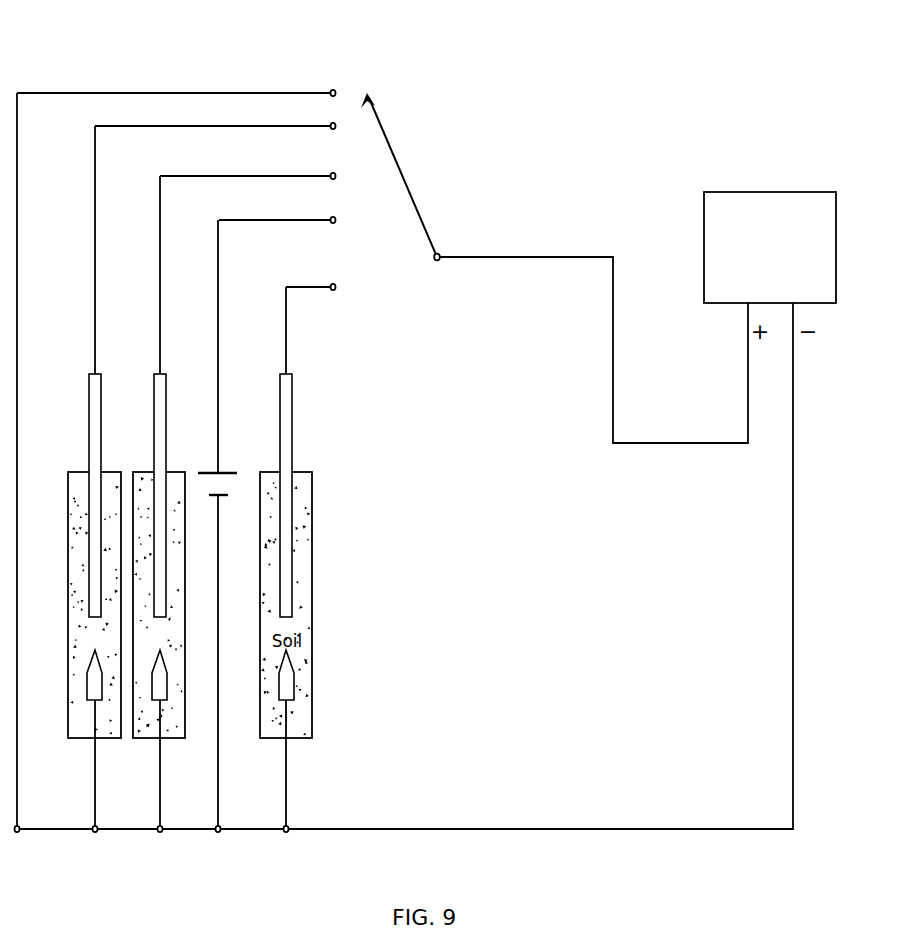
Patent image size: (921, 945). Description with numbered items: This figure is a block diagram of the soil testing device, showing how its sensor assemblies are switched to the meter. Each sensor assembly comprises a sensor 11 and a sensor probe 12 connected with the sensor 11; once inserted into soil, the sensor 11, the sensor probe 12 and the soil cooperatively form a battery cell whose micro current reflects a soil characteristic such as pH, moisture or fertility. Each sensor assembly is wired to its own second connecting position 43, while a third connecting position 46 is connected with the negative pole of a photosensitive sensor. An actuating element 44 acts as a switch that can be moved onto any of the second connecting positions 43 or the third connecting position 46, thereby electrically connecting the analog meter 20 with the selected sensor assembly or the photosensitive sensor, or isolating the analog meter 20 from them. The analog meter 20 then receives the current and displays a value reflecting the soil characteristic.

The second connecting position 43 is at (333, 287).
The third connecting position 46 is at (333, 93).
The actuating element 44 is at (427, 225).
The analog meter 20 is at (797, 192).
The sensor probe 12 is at (292, 437).
The sensor 11 is at (295, 692).